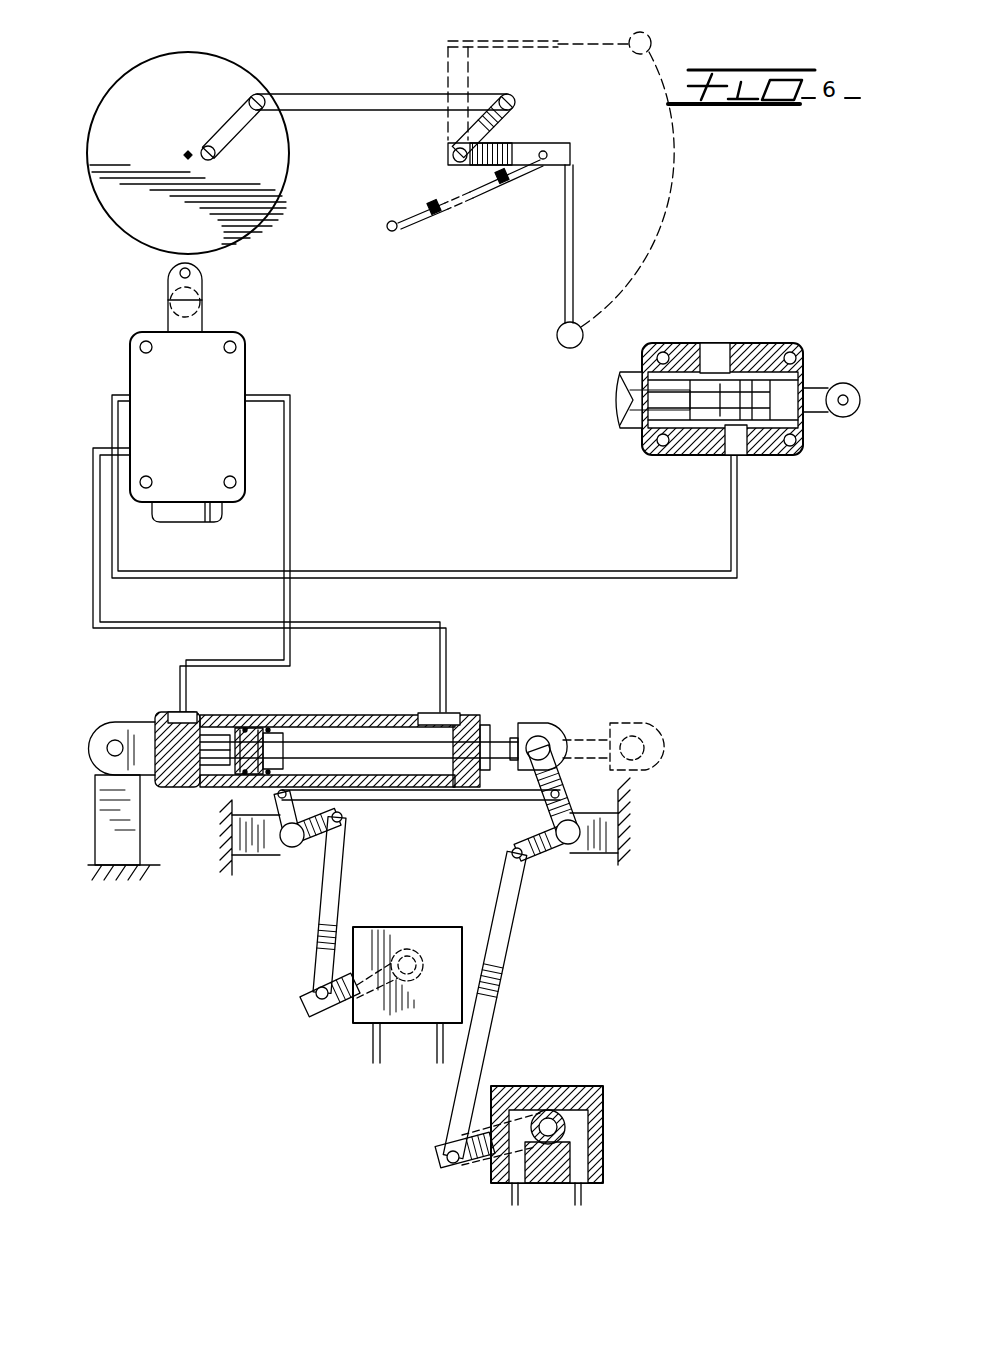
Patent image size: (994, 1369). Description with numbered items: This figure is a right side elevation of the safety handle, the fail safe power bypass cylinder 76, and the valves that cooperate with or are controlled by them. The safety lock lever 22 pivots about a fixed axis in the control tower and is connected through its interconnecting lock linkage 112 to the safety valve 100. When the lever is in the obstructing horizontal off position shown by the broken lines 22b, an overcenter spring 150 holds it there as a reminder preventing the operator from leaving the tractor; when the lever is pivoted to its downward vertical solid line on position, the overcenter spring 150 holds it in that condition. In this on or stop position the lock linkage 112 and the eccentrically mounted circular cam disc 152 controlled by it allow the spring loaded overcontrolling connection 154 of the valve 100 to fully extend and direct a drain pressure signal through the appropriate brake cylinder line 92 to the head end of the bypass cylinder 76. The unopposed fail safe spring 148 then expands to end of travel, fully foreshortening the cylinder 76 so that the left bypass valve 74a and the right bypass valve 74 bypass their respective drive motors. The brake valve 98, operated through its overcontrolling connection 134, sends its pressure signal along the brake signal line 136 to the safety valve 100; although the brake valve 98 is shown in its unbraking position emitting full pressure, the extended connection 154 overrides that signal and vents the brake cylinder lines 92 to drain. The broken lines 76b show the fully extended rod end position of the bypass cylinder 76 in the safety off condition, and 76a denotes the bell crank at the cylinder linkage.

The circular cam disc 152 is at (280, 187).
The overcontrolling connection 154 is at (165, 277).
The safety valve 100 is at (235, 447).
The lock linkage 112 is at (470, 130).
The safety lock lever 22 is at (574, 226).
The lever off position 22b is at (558, 50).
The overcenter spring 150 is at (435, 210).
The brake valve 98 is at (645, 344).
The overcontrolling connection 134 is at (829, 410).
The brake signal line 136 is at (656, 571).
The brake cylinder line 92 is at (290, 662).
The fail safe spring 148 is at (256, 724).
The bypass cylinder 76 is at (392, 788).
The bell crank 76a is at (272, 856).
The extended cylinder position 76b is at (612, 720).
The left bypass valve 74a is at (360, 940).
The right bypass valve 74 is at (535, 1088).